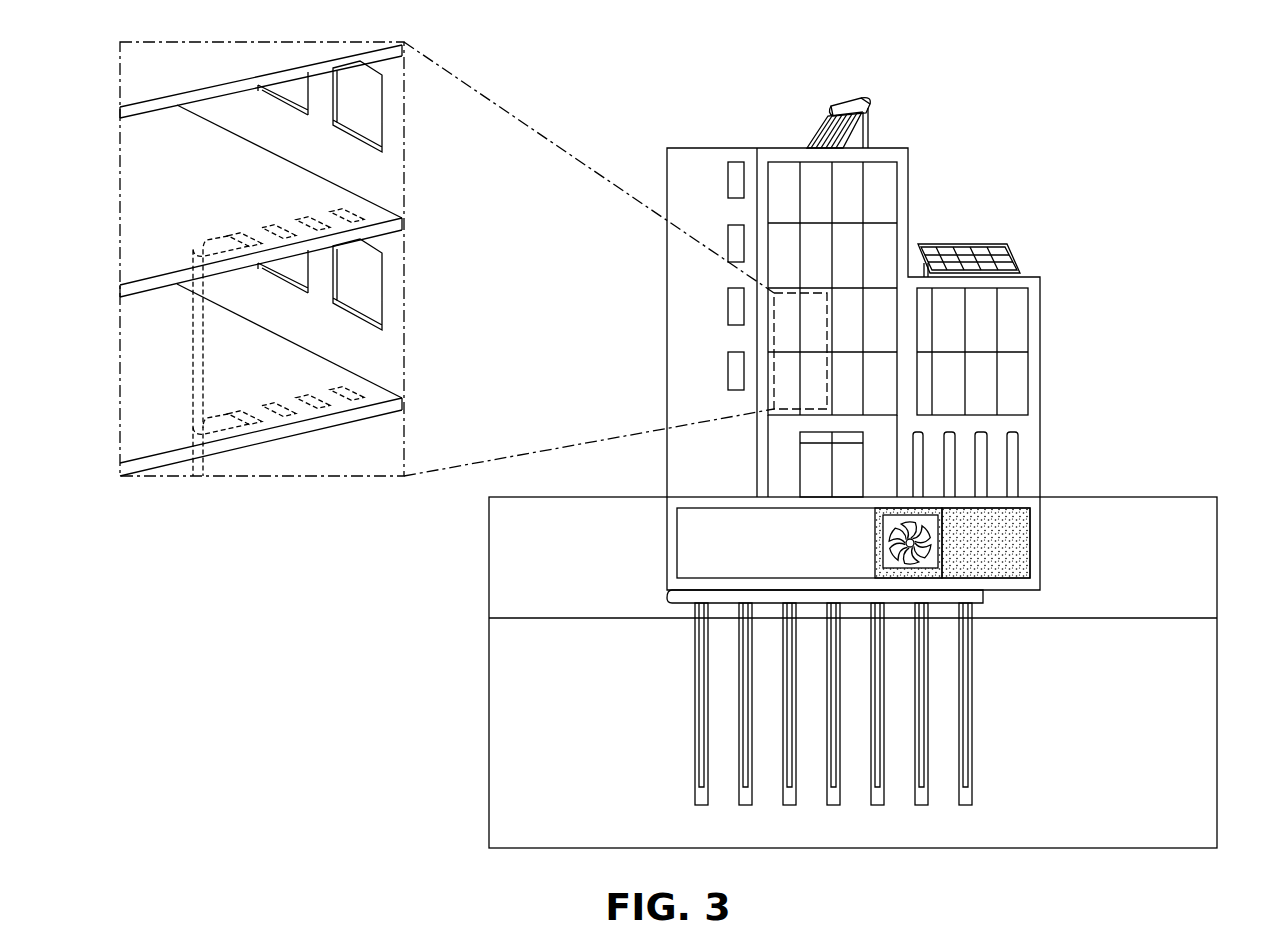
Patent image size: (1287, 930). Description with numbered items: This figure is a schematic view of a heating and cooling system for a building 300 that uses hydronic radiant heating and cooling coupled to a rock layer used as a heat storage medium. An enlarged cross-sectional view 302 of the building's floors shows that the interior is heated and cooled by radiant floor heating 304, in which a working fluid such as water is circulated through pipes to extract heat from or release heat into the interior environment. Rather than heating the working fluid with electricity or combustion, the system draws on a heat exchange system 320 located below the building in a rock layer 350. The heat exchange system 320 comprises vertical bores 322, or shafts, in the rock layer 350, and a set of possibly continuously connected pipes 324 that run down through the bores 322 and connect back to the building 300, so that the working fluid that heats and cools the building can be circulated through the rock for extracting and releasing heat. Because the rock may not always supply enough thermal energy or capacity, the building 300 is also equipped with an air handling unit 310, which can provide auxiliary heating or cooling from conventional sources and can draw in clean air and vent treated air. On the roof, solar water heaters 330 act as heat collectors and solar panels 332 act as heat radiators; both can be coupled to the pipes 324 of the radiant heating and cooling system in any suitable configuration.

The building 300 is at (938, 128).
The enlarged cross-sectional view 302 is at (447, 310).
The radiant floor heating 304 is at (256, 216).
The air handling unit 310 is at (1010, 543).
The heat exchange system 320 is at (828, 697).
The vertical bores 322 is at (695, 795).
The pipes 324 is at (696, 609).
The solar water heaters 330 is at (845, 99).
The solar panels 332 is at (970, 243).
The rock layer 350 is at (513, 735).